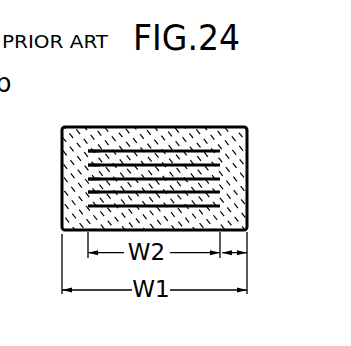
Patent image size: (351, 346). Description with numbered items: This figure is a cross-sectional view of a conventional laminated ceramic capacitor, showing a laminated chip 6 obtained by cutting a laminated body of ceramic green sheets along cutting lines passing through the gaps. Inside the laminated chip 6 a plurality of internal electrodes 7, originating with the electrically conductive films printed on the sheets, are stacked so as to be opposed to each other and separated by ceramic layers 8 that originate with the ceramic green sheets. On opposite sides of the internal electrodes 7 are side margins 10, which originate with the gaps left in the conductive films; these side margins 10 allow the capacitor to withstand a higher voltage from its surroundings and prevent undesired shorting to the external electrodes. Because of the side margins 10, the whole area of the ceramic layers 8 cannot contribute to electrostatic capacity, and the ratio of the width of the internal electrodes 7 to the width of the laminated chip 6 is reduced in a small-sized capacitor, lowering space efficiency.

The laminated chip 6 is at (220, 127).
The internal electrodes 7 is at (192, 206).
The ceramic layers 8 is at (91, 193).
The side margins 10 is at (234, 253).